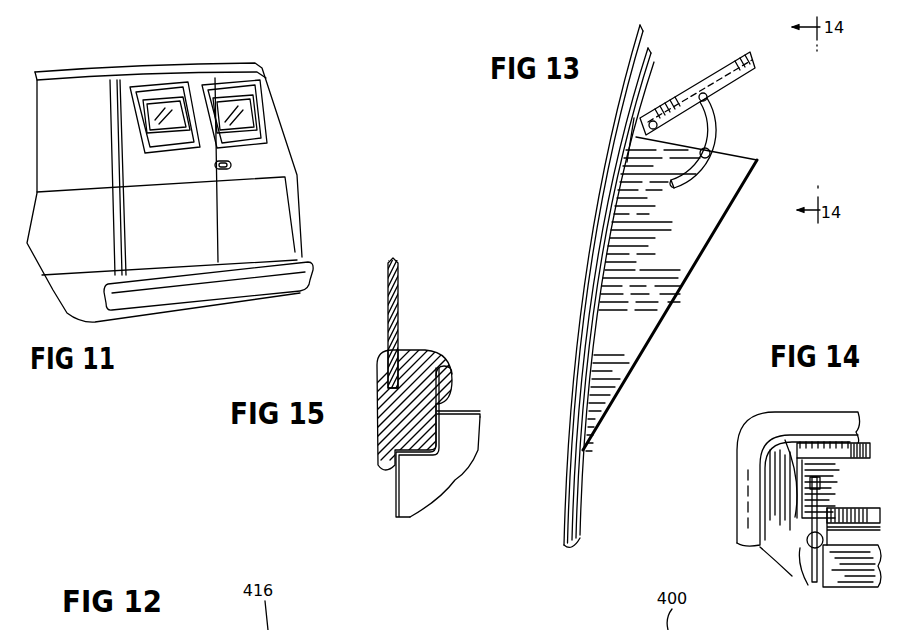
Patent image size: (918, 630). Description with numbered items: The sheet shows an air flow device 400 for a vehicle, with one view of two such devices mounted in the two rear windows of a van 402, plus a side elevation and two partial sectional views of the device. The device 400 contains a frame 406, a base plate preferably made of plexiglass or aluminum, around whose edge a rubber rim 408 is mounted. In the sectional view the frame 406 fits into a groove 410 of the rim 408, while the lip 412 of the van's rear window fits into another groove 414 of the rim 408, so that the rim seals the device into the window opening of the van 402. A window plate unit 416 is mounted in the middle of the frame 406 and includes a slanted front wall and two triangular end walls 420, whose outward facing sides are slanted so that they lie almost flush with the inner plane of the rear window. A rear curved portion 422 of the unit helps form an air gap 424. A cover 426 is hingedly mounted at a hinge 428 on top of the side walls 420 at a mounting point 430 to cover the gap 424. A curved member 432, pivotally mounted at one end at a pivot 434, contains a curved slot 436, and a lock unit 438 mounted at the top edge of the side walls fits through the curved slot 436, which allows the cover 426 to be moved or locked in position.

In FIG. 11, the air flow device 400 is at (228, 88).
In FIG. 13, the air flow device 400 is at (661, 293).
In FIG. 11, the van 402 is at (273, 218).
In FIG. 15, the van 402 is at (452, 446).
In FIG. 11, the frame 406 is at (264, 137).
In FIG. 15, the frame 406 is at (392, 314).
In FIG. 14, the frame 406 is at (781, 545).
In FIG. 11, the rubber rim 408 is at (268, 141).
In FIG. 15, the rubber rim 408 is at (436, 405).
In FIG. 13, the rubber rim 408 is at (573, 542).
In FIG. 14, the rubber rim 408 is at (745, 492).
In FIG. 15, the groove 410 is at (388, 368).
In FIG. 15, the lip 412 is at (453, 397).
In FIG. 15, the groove 414 is at (452, 377).
In FIG. 11, the window plate unit 416 is at (243, 117).
In FIG. 13, the window plate unit 416 is at (659, 333).
In FIG. 13, the end walls 420 is at (677, 273).
In FIG. 14, the end walls 420 is at (839, 493).
In FIG. 13, the rear curved portion 422 is at (638, 143).
In FIG. 13, the air gap 424 is at (721, 141).
In FIG. 13, the cover 426 is at (687, 102).
In FIG. 14, the cover 426 is at (813, 450).
In FIG. 14, the hinge mounting 428 is at (790, 440).
In FIG. 14, the mounting location on side walls 430 is at (830, 514).
In FIG. 13, the curved member 432 is at (719, 128).
In FIG. 14, the curved member 432 is at (820, 484).
In FIG. 13, the pivot mounting 434 is at (704, 92).
In FIG. 13, the curved slot 436 is at (677, 187).
In FIG. 13, the lock unit 438 is at (711, 156).
In FIG. 14, the lock unit 438 is at (804, 548).